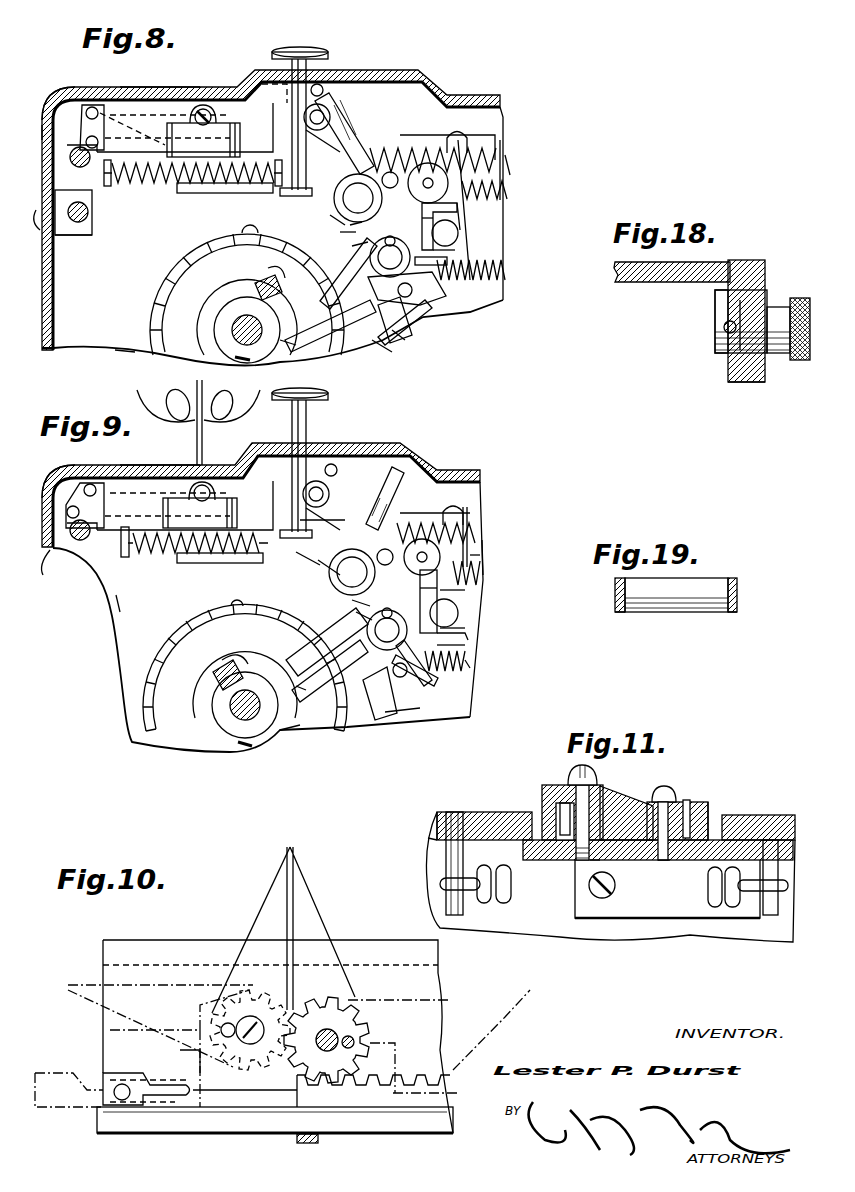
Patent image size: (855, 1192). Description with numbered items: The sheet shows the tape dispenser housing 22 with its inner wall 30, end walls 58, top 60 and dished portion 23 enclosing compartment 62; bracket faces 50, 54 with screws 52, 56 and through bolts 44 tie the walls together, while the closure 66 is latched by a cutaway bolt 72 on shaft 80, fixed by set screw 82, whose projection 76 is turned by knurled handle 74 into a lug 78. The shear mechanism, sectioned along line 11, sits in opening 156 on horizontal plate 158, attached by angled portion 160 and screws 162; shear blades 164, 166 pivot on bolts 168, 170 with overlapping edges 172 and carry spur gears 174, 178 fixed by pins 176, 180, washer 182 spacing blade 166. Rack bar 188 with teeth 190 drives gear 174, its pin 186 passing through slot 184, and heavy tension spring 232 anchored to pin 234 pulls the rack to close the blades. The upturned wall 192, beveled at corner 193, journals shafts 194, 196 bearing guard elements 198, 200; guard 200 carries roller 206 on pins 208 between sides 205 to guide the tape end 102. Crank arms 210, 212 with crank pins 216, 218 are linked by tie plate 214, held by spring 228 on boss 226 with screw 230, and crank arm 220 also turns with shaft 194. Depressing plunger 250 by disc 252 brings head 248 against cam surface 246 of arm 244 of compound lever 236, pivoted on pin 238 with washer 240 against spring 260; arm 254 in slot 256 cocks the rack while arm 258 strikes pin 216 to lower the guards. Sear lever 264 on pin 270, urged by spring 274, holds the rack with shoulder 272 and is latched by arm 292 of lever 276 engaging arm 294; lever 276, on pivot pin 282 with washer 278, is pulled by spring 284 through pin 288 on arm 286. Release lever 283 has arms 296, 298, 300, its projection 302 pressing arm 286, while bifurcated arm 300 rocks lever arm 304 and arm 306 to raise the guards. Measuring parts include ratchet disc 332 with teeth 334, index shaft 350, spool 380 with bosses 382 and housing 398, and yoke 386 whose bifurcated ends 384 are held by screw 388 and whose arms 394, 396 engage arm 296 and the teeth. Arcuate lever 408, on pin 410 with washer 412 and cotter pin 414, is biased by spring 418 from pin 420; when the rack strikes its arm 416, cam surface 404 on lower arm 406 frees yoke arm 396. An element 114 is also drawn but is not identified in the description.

In FIG. 10, the section line 11 is at (87, 1080).
In FIG. 8, the housing 22 is at (512, 112).
In FIG. 9, the housing 22 is at (394, 442).
In FIG. 8, the upwardly-dished portion 23 is at (402, 78).
In FIG. 9, the upwardly-dished portion 23 is at (268, 455).
In FIG. 8, the inner vertical wall 30 is at (75, 352).
In FIG. 9, the inner vertical wall 30 is at (110, 620).
In FIG. 11, the inner vertical wall 30 is at (680, 940).
In FIG. 10, the inner vertical wall 30 is at (138, 948).
In FIG. 8, the through bolts 44 is at (78, 166).
In FIG. 9, the through bolts 44 is at (84, 540).
In FIG. 8, the bracket face 50 is at (90, 236).
In FIG. 8, the screws 52 is at (92, 216).
In FIG. 8, the bracket face 54 is at (66, 237).
In FIG. 8, the screws 56 is at (42, 218).
In FIG. 8, the end walls 58 is at (55, 340).
In FIG. 9, the end walls 58 is at (50, 565).
In FIG. 8, the top 60 is at (450, 97).
In FIG. 9, the top 60 is at (486, 476).
In FIG. 18, the top 60 is at (636, 282).
In FIG. 8, the compartment 62 is at (128, 347).
In FIG. 9, the compartment 62 is at (112, 605).
In FIG. 18, the movable closure 66 is at (750, 385).
In FIG. 18, the cutaway bolt 72 is at (714, 340).
In FIG. 18, the knurled operating handle 74 is at (798, 362).
In FIG. 18, the projection 76 is at (714, 298).
In FIG. 18, the lug 78 is at (750, 264).
In FIG. 18, the rotatable shaft 80 is at (735, 345).
In FIG. 18, the set screw 82 is at (722, 327).
In FIG. 9, the free end of the tape 102 is at (196, 436).
In FIG. 8, the stud 114 is at (242, 230).
In FIG. 9, the stud 114 is at (230, 602).
In FIG. 11, the rectangular opening 156 is at (433, 818).
In FIG. 11, the horizontal plate 158 is at (532, 865).
In FIG. 10, the horizontal plate 158 is at (95, 1030).
In FIG. 8, the downwardly angled portion 160 is at (218, 186).
In FIG. 9, the downwardly angled portion 160 is at (210, 562).
In FIG. 11, the downwardly angled portion 160 is at (650, 918).
In FIG. 8, the screws 162 is at (188, 190).
In FIG. 9, the screws 162 is at (186, 566).
In FIG. 11, the screws 162 is at (590, 893).
In FIG. 11, the shear blade 164 is at (700, 812).
In FIG. 10, the shear blade 164 is at (318, 925).
In FIG. 11, the shear blade 166 is at (545, 786).
In FIG. 10, the shear blade 166 is at (72, 985).
In FIG. 11, the bolt 168 is at (668, 786).
In FIG. 10, the bolt 168 is at (326, 1030).
In FIG. 11, the bolt 170 is at (575, 774).
In FIG. 10, the bolt 170 is at (250, 1020).
In FIG. 11, the overlap 172 is at (622, 790).
In FIG. 11, the spur gear 174 is at (668, 862).
In FIG. 10, the spur gear 174 is at (312, 1072).
In FIG. 11, the pin 176 is at (690, 800).
In FIG. 10, the pin 176 is at (358, 1042).
In FIG. 11, the spur gear 178 is at (610, 862).
In FIG. 10, the spur gear 178 is at (245, 1068).
In FIG. 11, the pin 180 is at (545, 800).
In FIG. 10, the pin 180 is at (220, 1030).
In FIG. 11, the washer 182 is at (550, 812).
In FIG. 11, the elongated through slot 184 is at (428, 845).
In FIG. 10, the elongated through slot 184 is at (170, 1078).
In FIG. 8, the vertical pin 186 is at (108, 186).
In FIG. 9, the vertical pin 186 is at (126, 556).
In FIG. 11, the vertical pin 186 is at (447, 902).
In FIG. 10, the vertical pin 186 is at (124, 1100).
In FIG. 8, the rack bar 188 is at (430, 128).
In FIG. 9, the rack bar 188 is at (445, 512).
In FIG. 11, the rack bar 188 is at (470, 812).
In FIG. 10, the rack bar 188 is at (236, 1108).
In FIG. 10, the teeth 190 is at (368, 1092).
In FIG. 8, the vertical wall 192 is at (62, 102).
In FIG. 9, the vertical wall 192 is at (60, 480).
In FIG. 10, the vertical wall 192 is at (355, 1135).
In FIG. 8, the beveled corner 193 is at (45, 125).
In FIG. 8, the shaft 194 is at (280, 120).
In FIG. 9, the shaft 194 is at (322, 494).
In FIG. 8, the shaft 196 is at (92, 106).
In FIG. 9, the shaft 196 is at (90, 484).
In FIG. 8, the guard element 198 is at (255, 80).
In FIG. 9, the guard element 198 is at (250, 490).
In FIG. 8, the guard element 200 is at (158, 92).
In FIG. 9, the guard element 200 is at (132, 470).
In FIG. 19, the projecting sides 205 is at (620, 614).
In FIG. 19, the roller 206 is at (672, 612).
In FIG. 19, the pins 208 is at (614, 590).
In FIG. 8, the crank arm 210 is at (332, 110).
In FIG. 9, the crank arm 210 is at (338, 470).
In FIG. 8, the crank arm 212 is at (160, 115).
In FIG. 9, the crank arm 212 is at (100, 492).
In FIG. 8, the curved tie plate 214 is at (236, 118).
In FIG. 9, the curved tie plate 214 is at (178, 520).
In FIG. 8, the crank pin 216 is at (325, 90).
In FIG. 9, the crank pin 216 is at (335, 455).
In FIG. 8, the crank pin 218 is at (102, 142).
In FIG. 8, the crank arm 220 is at (330, 150).
In FIG. 9, the crank arm 220 is at (322, 508).
In FIG. 8, the boss 226 is at (195, 105).
In FIG. 9, the boss 226 is at (205, 478).
In FIG. 10, the boss 226 is at (270, 1140).
In FIG. 8, the spring 228 is at (240, 130).
In FIG. 9, the spring 228 is at (224, 525).
In FIG. 8, the screw 230 is at (205, 108).
In FIG. 9, the screw 230 is at (195, 480).
In FIG. 8, the tension spring 232 is at (150, 185).
In FIG. 9, the tension spring 232 is at (152, 560).
In FIG. 11, the tension spring 232 is at (482, 900).
In FIG. 8, the pin 234 is at (275, 190).
In FIG. 11, the pin 234 is at (770, 920).
In FIG. 8, the compound lever 236 is at (380, 180).
In FIG. 9, the compound lever 236 is at (380, 563).
In FIG. 8, the pin 238 is at (358, 198).
In FIG. 8, the washer 240 is at (340, 238).
In FIG. 8, the arm 244 is at (330, 222).
In FIG. 9, the arm 244 is at (326, 570).
In FIG. 8, the cam surface 246 is at (292, 200).
In FIG. 9, the cam surface 246 is at (306, 560).
In FIG. 9, the head 248 is at (296, 540).
In FIG. 8, the plunger 250 is at (332, 62).
In FIG. 9, the plunger 250 is at (312, 420).
In FIG. 8, the operating disc 252 is at (314, 47).
In FIG. 9, the operating disc 252 is at (314, 398).
In FIG. 8, the second arm 254 is at (390, 156).
In FIG. 9, the second arm 254 is at (388, 525).
In FIG. 8, the elongated slot 256 is at (420, 165).
In FIG. 9, the elongated slot 256 is at (412, 545).
In FIG. 8, the third arm 258 is at (348, 128).
In FIG. 9, the third arm 258 is at (410, 470).
In FIG. 8, the tension spring 260 is at (512, 157).
In FIG. 9, the tension spring 260 is at (480, 540).
In FIG. 9, the sear lever 264 is at (480, 556).
In FIG. 8, the pin 270 is at (457, 132).
In FIG. 8, the shouldered portion 272 is at (498, 150).
In FIG. 9, the shouldered portion 272 is at (470, 530).
In FIG. 8, the tension spring 274 is at (512, 186).
In FIG. 9, the tension spring 274 is at (485, 578).
In FIG. 8, the lever 276 is at (362, 276).
In FIG. 8, the washer 278 is at (380, 293).
In FIG. 8, the pivot pin 282 is at (418, 244).
In FIG. 9, the pivot pin 282 is at (376, 650).
In FIG. 9, the release lever 283 is at (356, 612).
In FIG. 8, the tension spring 284 is at (508, 268).
In FIG. 9, the tension spring 284 is at (468, 670).
In FIG. 8, the arm 286 is at (436, 292).
In FIG. 9, the arm 286 is at (440, 688).
In FIG. 8, the pin 288 is at (416, 306).
In FIG. 9, the pin 288 is at (418, 688).
In FIG. 8, the arm 292 is at (458, 252).
In FIG. 9, the arm 292 is at (468, 648).
In FIG. 8, the arm 294 is at (422, 222).
In FIG. 8, the arm 296 is at (306, 304).
In FIG. 9, the arm 296 is at (350, 635).
In FIG. 8, the arm 298 is at (405, 286).
In FIG. 9, the arm 298 is at (82, 512).
In FIG. 8, the arm 300 is at (352, 250).
In FIG. 9, the arm 300 is at (352, 600).
In FIG. 8, the laterally projecting portion 302 is at (450, 262).
In FIG. 9, the laterally projecting portion 302 is at (420, 672).
In FIG. 8, the lever arm 304 is at (350, 228).
In FIG. 9, the lever arm 304 is at (352, 572).
In FIG. 9, the arm 306 is at (320, 525).
In FIG. 8, the ratchet disc 332 is at (165, 316).
In FIG. 9, the ratchet disc 332 is at (160, 651).
In FIG. 8, the teeth 334 is at (160, 282).
In FIG. 9, the teeth 334 is at (170, 628).
In FIG. 8, the index shaft 350 is at (254, 322).
In FIG. 9, the index shaft 350 is at (256, 695).
In FIG. 8, the spool 380 is at (214, 318).
In FIG. 9, the spool 380 is at (216, 714).
In FIG. 8, the bosses 382 is at (238, 282).
In FIG. 9, the bosses 382 is at (240, 665).
In FIG. 8, the bifurcated ends 384 is at (255, 280).
In FIG. 9, the bifurcated ends 384 is at (216, 668).
In FIG. 8, the yoke 386 is at (296, 345).
In FIG. 9, the yoke 386 is at (292, 733).
In FIG. 8, the screw 388 is at (275, 277).
In FIG. 9, the screw 388 is at (240, 655).
In FIG. 9, the arm 394 is at (318, 662).
In FIG. 9, the arm 396 is at (306, 690).
In FIG. 8, the housing 398 is at (204, 302).
In FIG. 9, the housing 398 is at (196, 680).
In FIG. 8, the inclined cam surface 404 is at (380, 340).
In FIG. 9, the inclined cam surface 404 is at (378, 716).
In FIG. 8, the lower arm 406 is at (400, 336).
In FIG. 9, the lower arm 406 is at (395, 718).
In FIG. 9, the arcuate lever 408 is at (470, 622).
In FIG. 8, the pin 410 is at (460, 235).
In FIG. 9, the pin 410 is at (470, 608).
In FIG. 9, the washer 412 is at (470, 596).
In FIG. 9, the cotter pin 414 is at (470, 635).
In FIG. 8, the upper arm 416 is at (482, 132).
In FIG. 9, the upper arm 416 is at (466, 515).
In FIG. 8, the tension spring 418 is at (458, 220).
In FIG. 9, the tension spring 418 is at (420, 578).
In FIG. 8, the pin 420 is at (420, 205).
In FIG. 9, the pin 420 is at (424, 590).